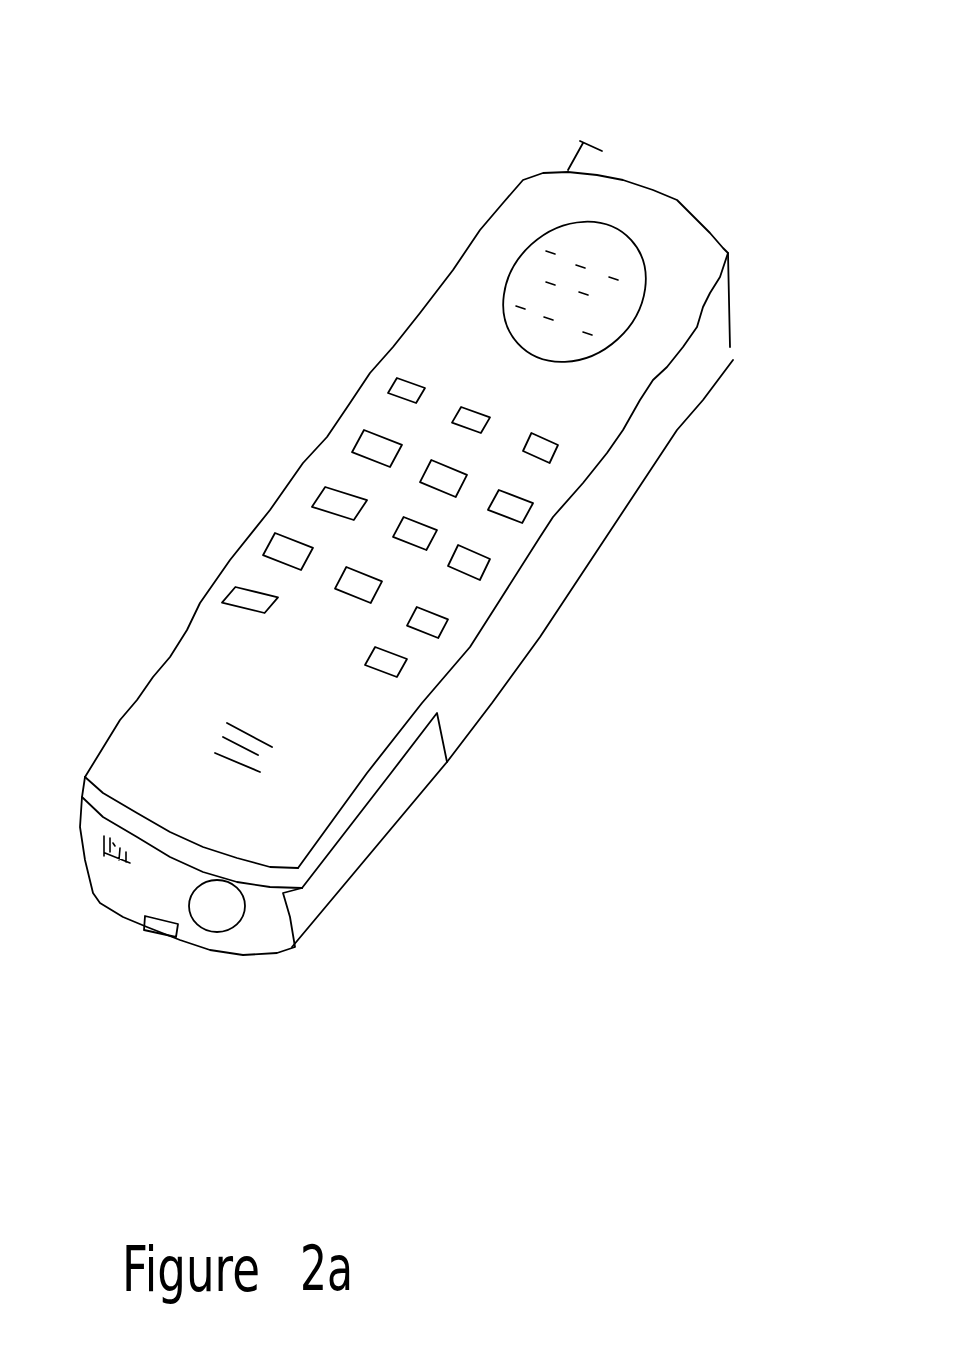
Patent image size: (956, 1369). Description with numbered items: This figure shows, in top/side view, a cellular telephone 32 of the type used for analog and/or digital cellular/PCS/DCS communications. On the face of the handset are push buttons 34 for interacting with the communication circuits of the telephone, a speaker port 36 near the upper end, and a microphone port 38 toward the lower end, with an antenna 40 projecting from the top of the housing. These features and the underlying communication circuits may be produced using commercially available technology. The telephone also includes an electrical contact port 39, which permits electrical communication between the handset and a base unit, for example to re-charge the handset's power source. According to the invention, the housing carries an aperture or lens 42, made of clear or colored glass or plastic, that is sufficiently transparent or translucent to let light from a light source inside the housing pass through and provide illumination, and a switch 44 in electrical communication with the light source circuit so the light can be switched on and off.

The cellular telephone 32 is at (678, 410).
The push buttons 34 is at (330, 497).
The speaker port 36 is at (617, 248).
The microphone port 38 is at (318, 766).
The electrical contact port 39 is at (175, 940).
The antenna 40 is at (567, 157).
The aperture or lens 42 is at (218, 918).
The switch 44 is at (117, 850).